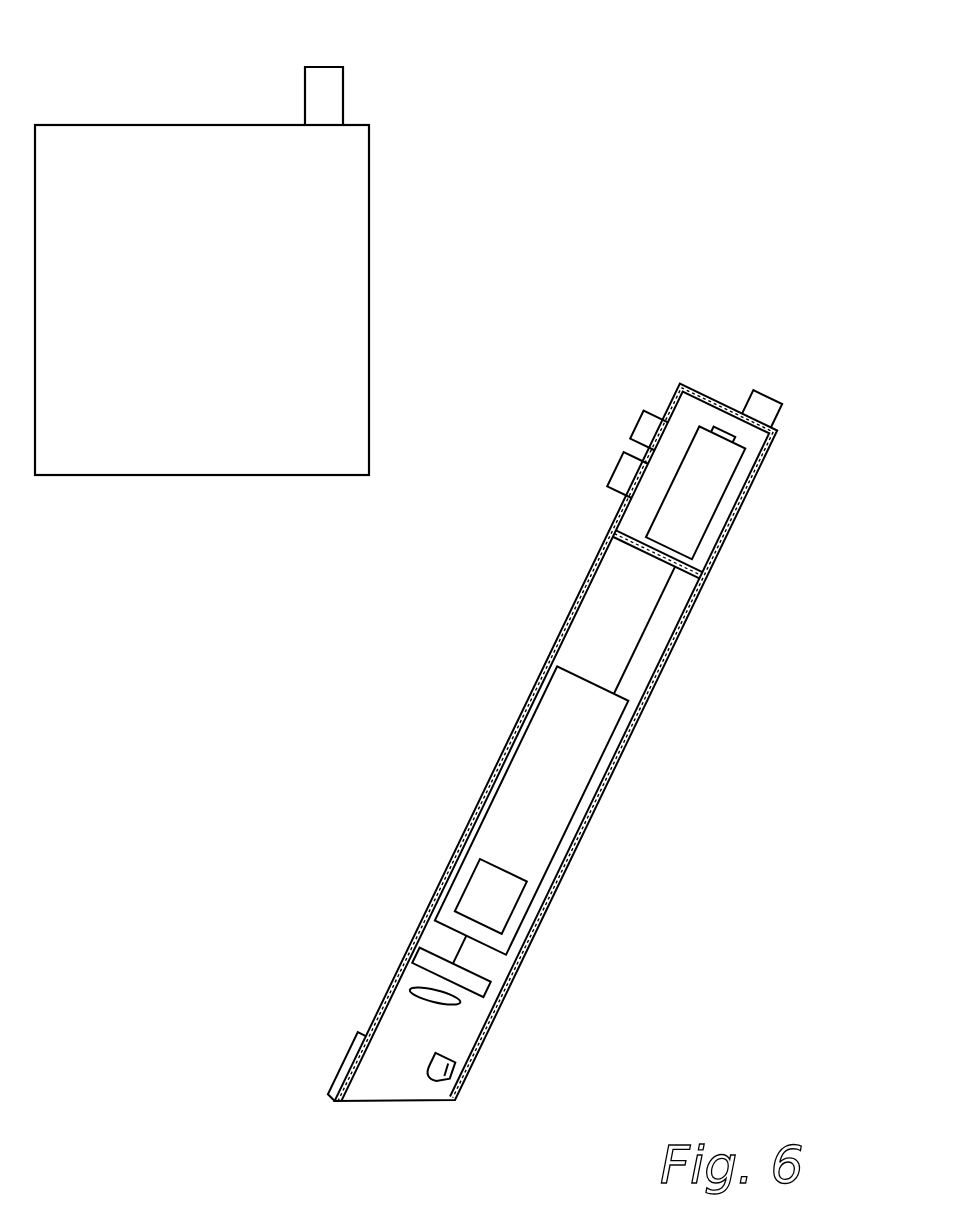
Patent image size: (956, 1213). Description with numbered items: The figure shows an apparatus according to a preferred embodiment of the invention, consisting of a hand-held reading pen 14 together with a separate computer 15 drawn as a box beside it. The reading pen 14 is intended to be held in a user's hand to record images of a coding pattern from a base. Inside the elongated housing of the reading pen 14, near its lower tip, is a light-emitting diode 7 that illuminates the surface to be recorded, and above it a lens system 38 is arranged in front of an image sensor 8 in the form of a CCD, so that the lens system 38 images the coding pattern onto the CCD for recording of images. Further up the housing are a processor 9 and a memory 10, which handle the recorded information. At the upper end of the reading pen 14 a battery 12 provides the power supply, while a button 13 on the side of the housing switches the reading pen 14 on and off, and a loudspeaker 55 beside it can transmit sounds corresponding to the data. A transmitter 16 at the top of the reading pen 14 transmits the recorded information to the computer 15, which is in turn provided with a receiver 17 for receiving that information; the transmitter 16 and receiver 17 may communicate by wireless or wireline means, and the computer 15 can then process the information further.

The computer 15 is at (173, 118).
The receiver 17 is at (330, 93).
The reading pen 14 is at (648, 725).
The transmitter 16 is at (760, 413).
The button 13 is at (628, 440).
The loudspeaker 55 is at (608, 478).
The battery 12 is at (692, 503).
The processor 9 is at (530, 840).
The memory 10 is at (495, 882).
The image sensor 8 is at (470, 968).
The lens system 38 is at (450, 1003).
The light-emitting diode 7 is at (440, 1085).